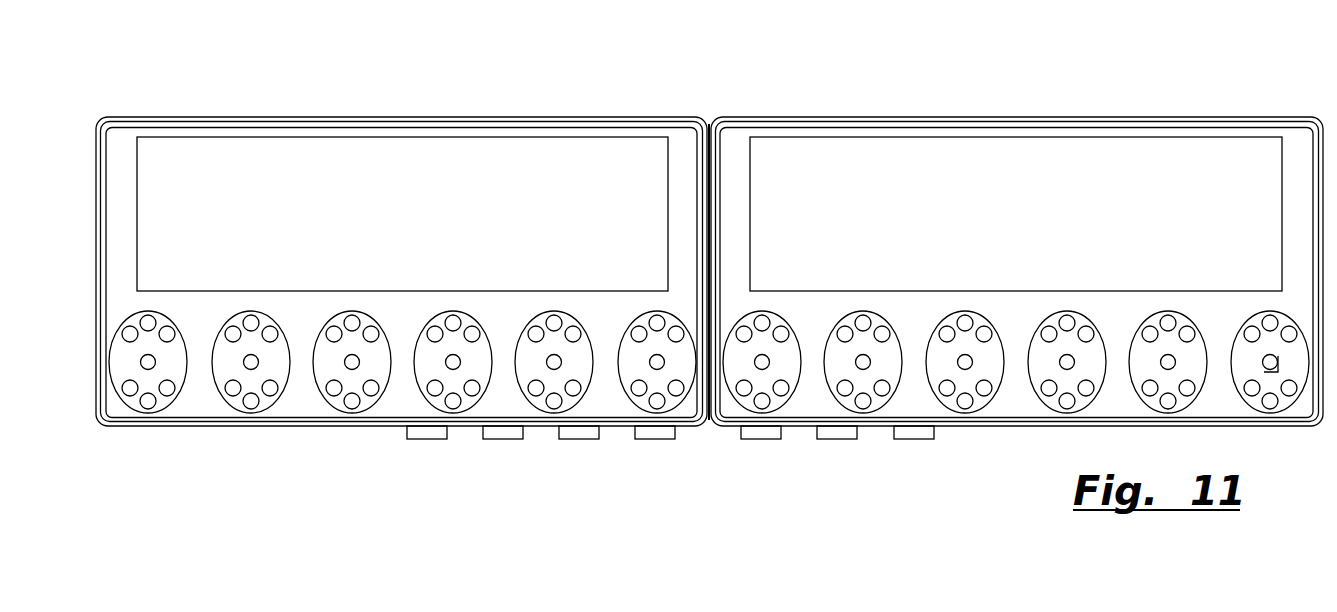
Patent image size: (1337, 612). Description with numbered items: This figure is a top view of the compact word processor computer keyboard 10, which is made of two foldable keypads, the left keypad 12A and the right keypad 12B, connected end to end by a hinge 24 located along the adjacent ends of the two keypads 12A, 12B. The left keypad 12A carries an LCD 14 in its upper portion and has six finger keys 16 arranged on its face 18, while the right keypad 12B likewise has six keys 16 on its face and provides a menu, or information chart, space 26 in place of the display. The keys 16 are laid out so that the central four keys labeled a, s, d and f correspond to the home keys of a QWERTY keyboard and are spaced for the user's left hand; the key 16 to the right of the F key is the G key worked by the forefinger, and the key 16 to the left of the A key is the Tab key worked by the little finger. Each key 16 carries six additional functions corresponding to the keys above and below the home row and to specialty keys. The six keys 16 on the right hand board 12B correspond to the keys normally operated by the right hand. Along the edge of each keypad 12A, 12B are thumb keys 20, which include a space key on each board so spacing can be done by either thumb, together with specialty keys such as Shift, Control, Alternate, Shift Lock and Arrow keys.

The keyboard 10 is at (713, 308).
The first keypad 12A is at (401, 238).
The second keypad 12B is at (1021, 233).
The LCD 14 is at (466, 224).
The keys 16 is at (438, 400).
The face 18 is at (406, 320).
The thumb keys 20 is at (673, 487).
The hinge 24 is at (712, 170).
The menu space 26 is at (1001, 224).